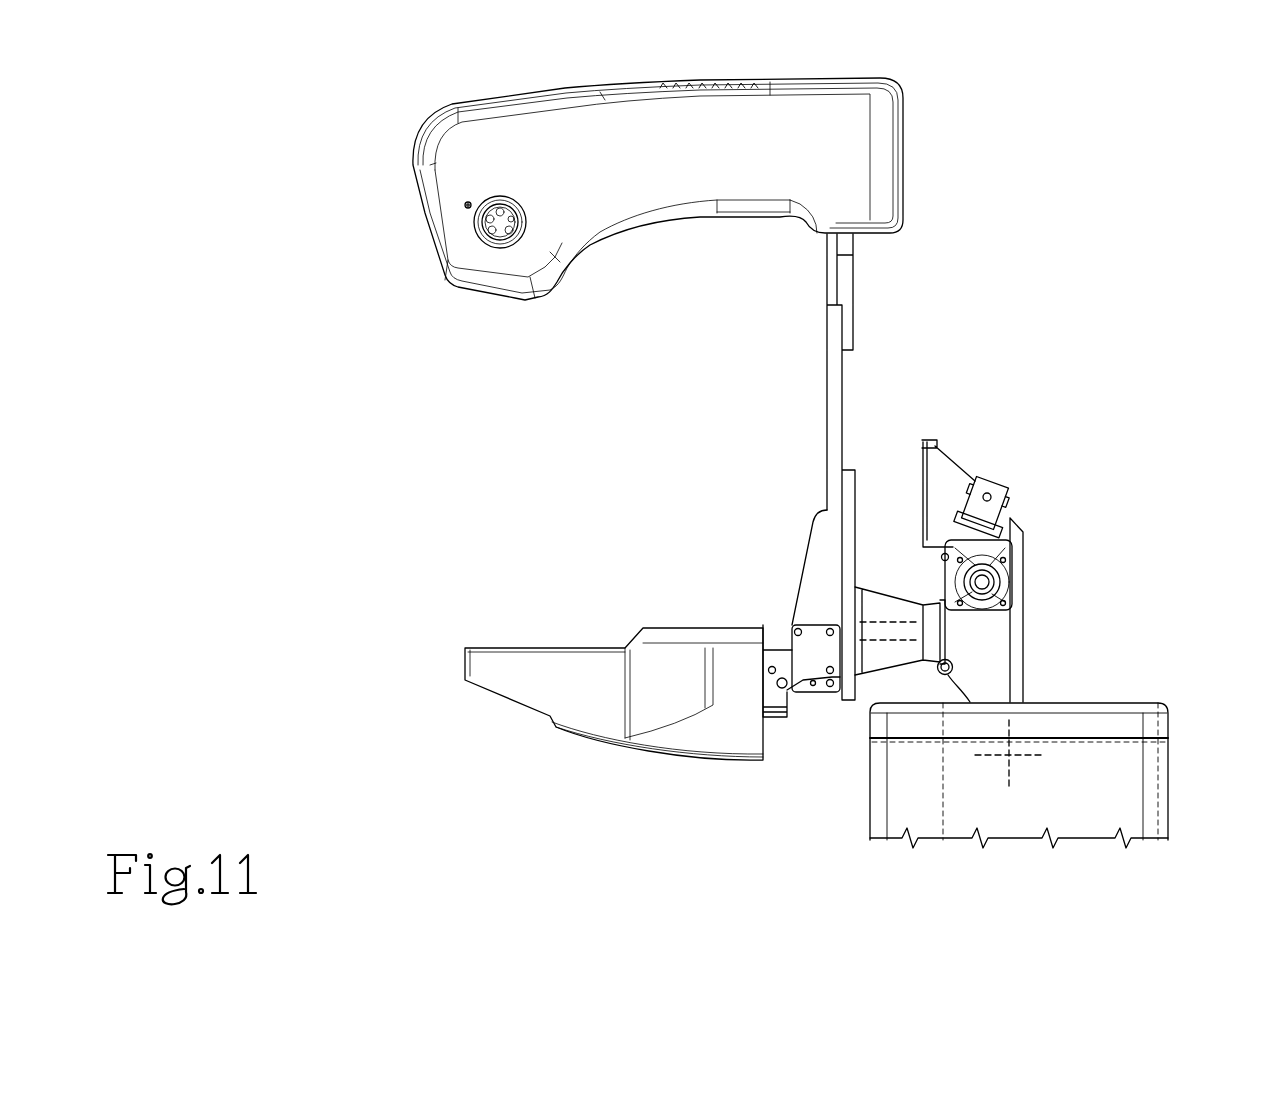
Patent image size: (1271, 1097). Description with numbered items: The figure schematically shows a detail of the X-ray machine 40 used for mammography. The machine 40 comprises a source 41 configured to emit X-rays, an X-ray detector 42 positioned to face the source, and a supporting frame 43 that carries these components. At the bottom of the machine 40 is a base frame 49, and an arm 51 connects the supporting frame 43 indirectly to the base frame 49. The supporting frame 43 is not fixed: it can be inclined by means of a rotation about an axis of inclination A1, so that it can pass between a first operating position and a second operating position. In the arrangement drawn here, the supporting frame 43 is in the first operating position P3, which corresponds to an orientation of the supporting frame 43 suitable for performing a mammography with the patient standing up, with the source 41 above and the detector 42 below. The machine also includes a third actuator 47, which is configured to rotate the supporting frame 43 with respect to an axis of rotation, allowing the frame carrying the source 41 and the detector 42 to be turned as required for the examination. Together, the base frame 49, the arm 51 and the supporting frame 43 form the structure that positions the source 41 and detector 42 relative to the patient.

The machine 40 is at (486, 751).
The source 41 is at (580, 135).
The X-ray detector 42 is at (660, 705).
The supporting frame 43 is at (833, 404).
The third actuator 47 is at (885, 643).
The base frame 49 is at (1070, 793).
The arm 51 is at (1005, 634).
The first operating position P3 is at (914, 346).
The axis of inclination A1 is at (1010, 757).